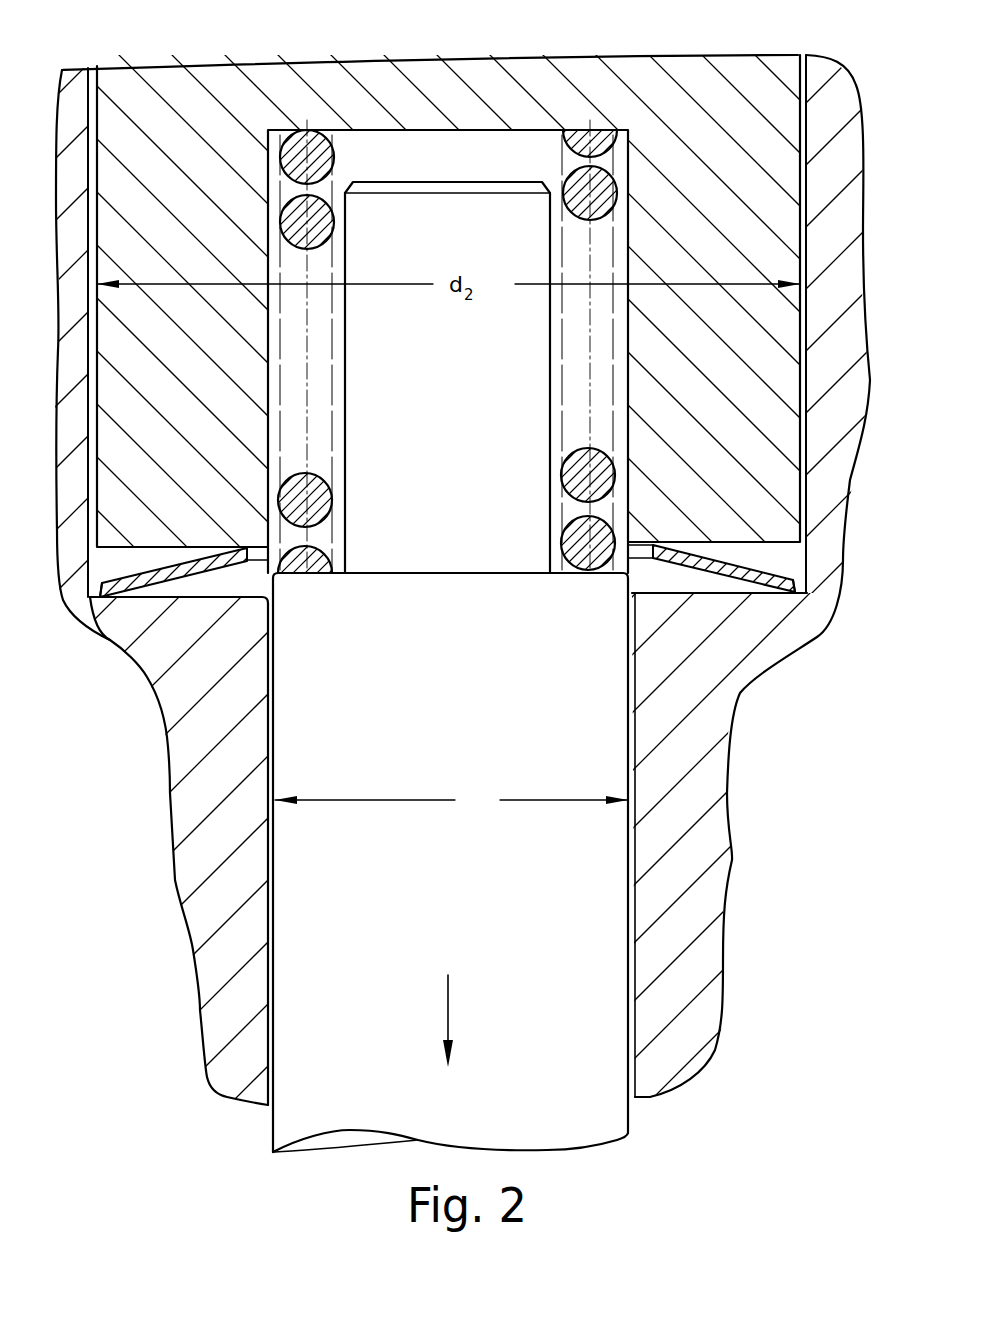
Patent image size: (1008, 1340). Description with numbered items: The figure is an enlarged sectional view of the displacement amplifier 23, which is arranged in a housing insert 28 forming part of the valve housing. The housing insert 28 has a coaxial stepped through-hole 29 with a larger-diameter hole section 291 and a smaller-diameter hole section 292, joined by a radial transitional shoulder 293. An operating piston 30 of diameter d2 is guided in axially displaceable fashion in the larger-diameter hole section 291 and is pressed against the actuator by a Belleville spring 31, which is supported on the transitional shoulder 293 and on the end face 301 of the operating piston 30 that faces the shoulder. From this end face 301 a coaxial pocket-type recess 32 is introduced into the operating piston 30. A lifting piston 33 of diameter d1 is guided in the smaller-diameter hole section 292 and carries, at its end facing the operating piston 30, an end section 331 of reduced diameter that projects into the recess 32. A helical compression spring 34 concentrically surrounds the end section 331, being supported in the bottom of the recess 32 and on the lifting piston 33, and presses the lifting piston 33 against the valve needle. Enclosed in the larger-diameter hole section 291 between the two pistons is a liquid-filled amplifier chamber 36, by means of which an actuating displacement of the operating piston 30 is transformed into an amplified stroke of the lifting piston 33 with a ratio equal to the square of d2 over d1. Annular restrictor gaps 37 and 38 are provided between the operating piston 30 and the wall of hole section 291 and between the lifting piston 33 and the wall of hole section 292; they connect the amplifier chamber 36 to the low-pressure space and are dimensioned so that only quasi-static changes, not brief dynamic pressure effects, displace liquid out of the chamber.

The displacement amplifier 23 is at (162, 805).
The housing insert 28 is at (200, 917).
The stepped through-hole 29 is at (226, 579).
The larger-diameter hole section 291 is at (88, 583).
The smaller-diameter hole section 292 is at (273, 1110).
The radial transitional shoulder 293 is at (140, 660).
The operating piston 30 is at (170, 120).
The end face 301 is at (800, 577).
The Belleville spring 31 is at (722, 572).
The pocket-type recess 32 is at (440, 157).
The lifting piston 33 is at (570, 727).
The end section of reduced diameter 331 is at (497, 223).
The helical compression spring 34 is at (316, 133).
The amplifier chamber 36 is at (660, 573).
The restrictor gap 37 is at (807, 380).
The restrictor gap 38 is at (632, 910).